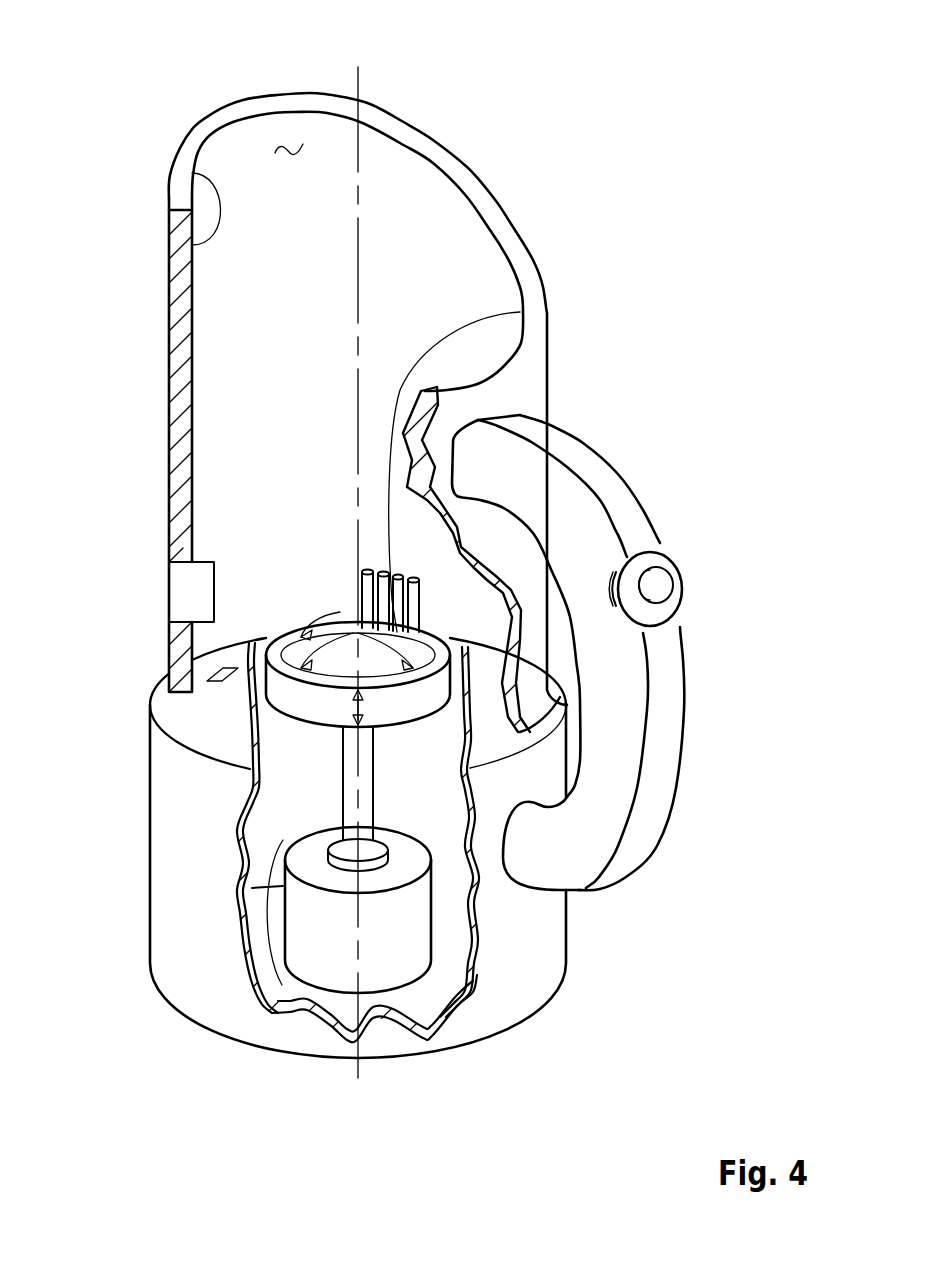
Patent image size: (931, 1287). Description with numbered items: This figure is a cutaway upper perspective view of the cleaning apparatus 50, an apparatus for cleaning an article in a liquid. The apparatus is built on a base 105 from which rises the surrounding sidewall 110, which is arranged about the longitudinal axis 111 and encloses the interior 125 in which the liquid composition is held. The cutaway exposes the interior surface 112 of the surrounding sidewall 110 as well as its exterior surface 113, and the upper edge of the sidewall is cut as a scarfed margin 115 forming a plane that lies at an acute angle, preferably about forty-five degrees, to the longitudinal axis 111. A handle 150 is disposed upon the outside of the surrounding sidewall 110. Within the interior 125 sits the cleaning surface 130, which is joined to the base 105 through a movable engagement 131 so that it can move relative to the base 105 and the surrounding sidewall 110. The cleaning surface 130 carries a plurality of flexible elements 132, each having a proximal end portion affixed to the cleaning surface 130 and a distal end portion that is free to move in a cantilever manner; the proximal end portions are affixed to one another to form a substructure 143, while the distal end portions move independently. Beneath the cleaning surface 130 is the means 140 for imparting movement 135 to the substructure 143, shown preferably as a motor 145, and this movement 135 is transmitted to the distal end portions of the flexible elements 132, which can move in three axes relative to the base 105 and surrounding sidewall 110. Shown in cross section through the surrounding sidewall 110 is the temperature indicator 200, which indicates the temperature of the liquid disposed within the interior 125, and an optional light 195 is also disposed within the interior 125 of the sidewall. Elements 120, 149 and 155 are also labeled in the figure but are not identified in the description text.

The cleaning apparatus 50 is at (646, 161).
The base 105 is at (170, 860).
The surrounding sidewall 110 is at (180, 500).
The longitudinal axis 111 is at (365, 74).
The interior surface 112 is at (170, 167).
The exterior surface 113 is at (169, 408).
The scarfed margin 115 is at (219, 110).
The dome wall 120 is at (293, 143).
The interior 125 is at (459, 246).
The cleaning surface 130 is at (322, 615).
The movable engagement 131 is at (250, 912).
The flexible elements 132 is at (520, 312).
The movement 135 is at (422, 672).
The means for imparting movement 140 is at (410, 932).
The substructure 143 is at (345, 622).
The motor 145 is at (410, 967).
The housing rim 149 is at (266, 683).
The handle 150 is at (632, 743).
The knob 155 is at (660, 588).
The light 195 is at (218, 677).
The temperature indicator 200 is at (180, 598).